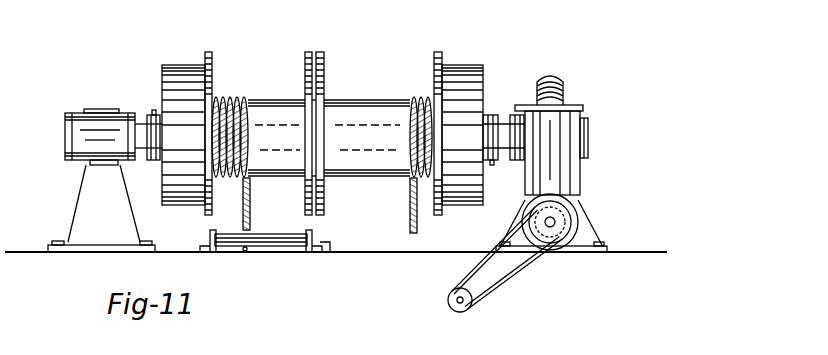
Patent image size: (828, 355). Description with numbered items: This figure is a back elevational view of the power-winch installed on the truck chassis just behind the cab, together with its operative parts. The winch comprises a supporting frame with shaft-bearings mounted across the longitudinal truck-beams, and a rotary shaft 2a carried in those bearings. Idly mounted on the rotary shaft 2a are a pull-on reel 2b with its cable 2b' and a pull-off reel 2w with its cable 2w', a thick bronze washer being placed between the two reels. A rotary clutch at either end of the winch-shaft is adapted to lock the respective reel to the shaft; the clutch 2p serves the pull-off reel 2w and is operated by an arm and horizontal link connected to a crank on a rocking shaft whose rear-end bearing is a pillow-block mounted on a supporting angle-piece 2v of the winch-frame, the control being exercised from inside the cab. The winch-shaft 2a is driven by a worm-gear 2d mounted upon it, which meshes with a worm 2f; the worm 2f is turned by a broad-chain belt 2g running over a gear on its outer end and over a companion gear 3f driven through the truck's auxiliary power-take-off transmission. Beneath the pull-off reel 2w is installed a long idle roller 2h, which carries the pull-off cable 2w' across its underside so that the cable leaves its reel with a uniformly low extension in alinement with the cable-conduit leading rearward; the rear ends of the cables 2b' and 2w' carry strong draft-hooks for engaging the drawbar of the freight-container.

The rotary shaft 2a is at (147, 120).
The clutch 2p is at (182, 65).
The pull-off reel 2w is at (258, 103).
The pull-on reel 2b is at (378, 105).
The supporting angle-piece 2v is at (470, 65).
The worm-gear 2d is at (565, 86).
The worm 2f is at (575, 212).
The broad-chain belt 2g is at (515, 275).
The drive sprocket 3f is at (452, 307).
The long idle roller 2h is at (278, 248).
The pull-off cable 2w' is at (272, 204).
The pull-on cable 2b' is at (390, 205).